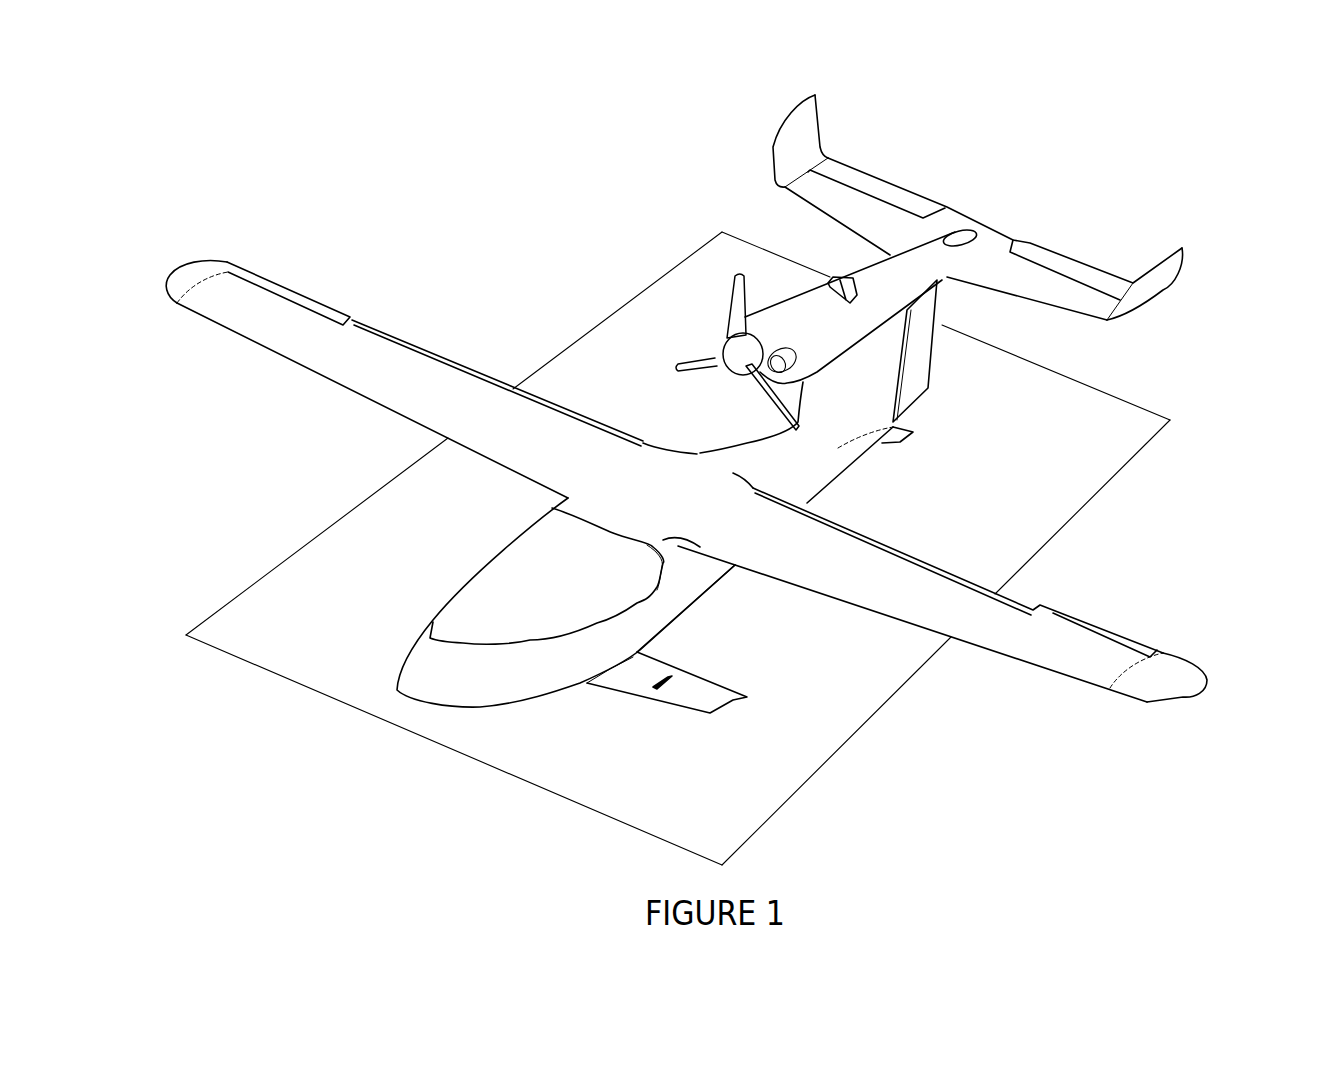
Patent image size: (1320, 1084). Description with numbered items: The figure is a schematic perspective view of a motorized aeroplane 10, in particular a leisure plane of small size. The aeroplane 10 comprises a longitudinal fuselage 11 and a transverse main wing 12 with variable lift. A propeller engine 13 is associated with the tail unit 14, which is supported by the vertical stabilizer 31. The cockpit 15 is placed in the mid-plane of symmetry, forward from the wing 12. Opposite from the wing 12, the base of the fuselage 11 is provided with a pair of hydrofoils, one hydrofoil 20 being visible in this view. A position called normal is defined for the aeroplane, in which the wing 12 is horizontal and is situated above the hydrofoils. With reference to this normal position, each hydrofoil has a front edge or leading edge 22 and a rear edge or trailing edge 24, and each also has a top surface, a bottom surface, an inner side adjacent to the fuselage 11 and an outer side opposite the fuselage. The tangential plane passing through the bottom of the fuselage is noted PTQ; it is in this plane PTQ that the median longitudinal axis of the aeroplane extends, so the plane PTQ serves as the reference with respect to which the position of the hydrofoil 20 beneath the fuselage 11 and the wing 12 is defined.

The motorized aeroplane 10 is at (610, 374).
The longitudinal fuselage 11 is at (707, 587).
The transverse main wing 12 is at (998, 600).
The propeller engine 13 is at (729, 286).
The tail unit 14 is at (1001, 255).
The cockpit 15 is at (483, 545).
The hydrofoil 20 is at (660, 715).
The leading edge 22 is at (653, 710).
The trailing edge 24 is at (719, 687).
The vertical stabilizer 31 is at (885, 385).
The tangential plane PTQ is at (1236, 480).